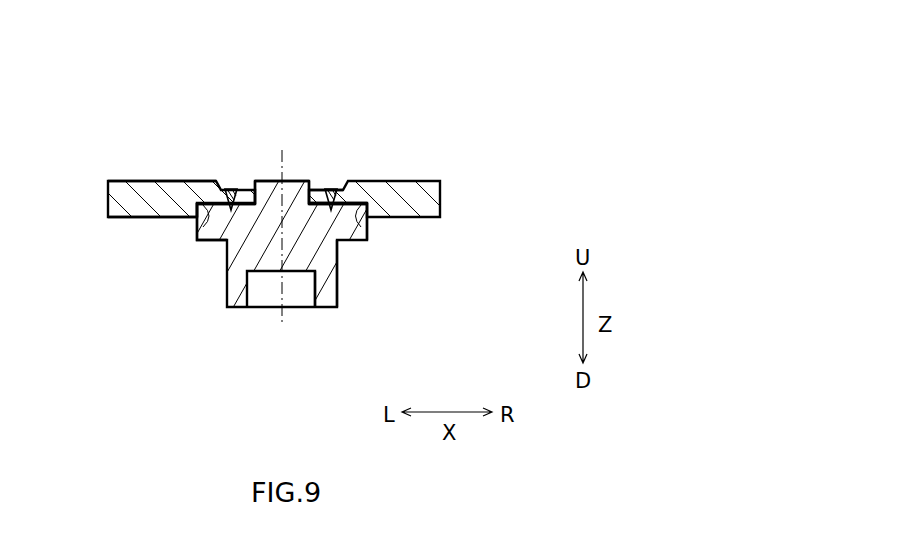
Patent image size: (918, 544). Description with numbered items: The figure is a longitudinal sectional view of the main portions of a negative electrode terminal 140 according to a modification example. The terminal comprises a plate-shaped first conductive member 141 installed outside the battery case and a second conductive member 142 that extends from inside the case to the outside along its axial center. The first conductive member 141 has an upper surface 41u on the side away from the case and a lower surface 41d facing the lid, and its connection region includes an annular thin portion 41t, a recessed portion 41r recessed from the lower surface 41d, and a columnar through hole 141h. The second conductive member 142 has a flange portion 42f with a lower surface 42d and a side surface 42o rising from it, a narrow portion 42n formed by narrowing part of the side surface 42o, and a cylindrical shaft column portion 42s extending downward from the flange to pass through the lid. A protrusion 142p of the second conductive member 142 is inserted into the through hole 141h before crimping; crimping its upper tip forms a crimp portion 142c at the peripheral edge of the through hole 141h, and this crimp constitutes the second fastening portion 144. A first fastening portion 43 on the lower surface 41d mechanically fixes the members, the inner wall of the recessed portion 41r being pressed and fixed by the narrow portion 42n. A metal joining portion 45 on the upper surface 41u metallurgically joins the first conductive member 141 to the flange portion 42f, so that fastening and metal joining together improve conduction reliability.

The negative electrode terminal 140 is at (368, 70).
The second fastening portion 144 is at (239, 112).
The first conductive member 141 is at (410, 154).
The through hole 141h is at (305, 181).
The first fastening portion 43 is at (197, 183).
The upper surface 41u is at (130, 181).
The lower surface 41d is at (130, 217).
The recessed portion 41r is at (205, 222).
The thin portion 41t is at (340, 182).
The metal joining portion 45 is at (231, 189).
The second conductive member 142 is at (419, 312).
The crimp portion 142c is at (270, 181).
The protrusion 142p is at (258, 272).
The narrow portion 42n is at (375, 222).
The side surface 42o is at (367, 230).
The lower surface 42d is at (342, 244).
The flange portion 42f is at (213, 239).
The shaft column portion 42s is at (326, 275).